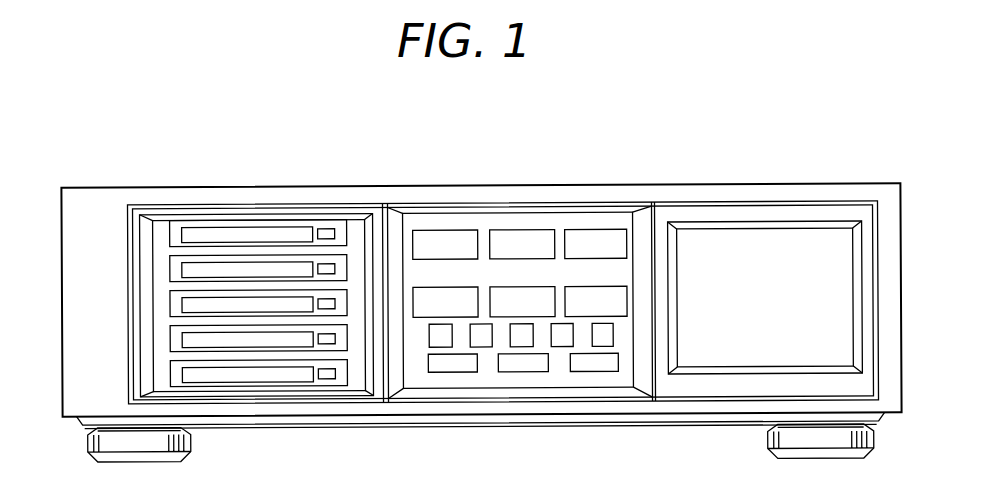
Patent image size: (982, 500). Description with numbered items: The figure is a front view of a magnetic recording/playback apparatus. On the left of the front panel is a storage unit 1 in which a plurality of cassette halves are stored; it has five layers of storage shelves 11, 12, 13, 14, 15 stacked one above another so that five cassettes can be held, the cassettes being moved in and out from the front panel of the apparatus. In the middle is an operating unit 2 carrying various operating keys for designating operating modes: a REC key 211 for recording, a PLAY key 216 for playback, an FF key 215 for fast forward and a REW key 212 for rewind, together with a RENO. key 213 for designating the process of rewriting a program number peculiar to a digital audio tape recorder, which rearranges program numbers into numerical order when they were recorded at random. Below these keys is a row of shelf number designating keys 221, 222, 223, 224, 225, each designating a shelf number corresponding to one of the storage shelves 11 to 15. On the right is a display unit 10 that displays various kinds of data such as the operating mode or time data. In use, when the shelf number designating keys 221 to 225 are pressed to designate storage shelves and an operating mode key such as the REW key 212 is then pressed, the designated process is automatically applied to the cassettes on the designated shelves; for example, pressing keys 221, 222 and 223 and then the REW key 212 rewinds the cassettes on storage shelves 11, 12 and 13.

The storage unit 1 is at (276, 203).
The storage shelf 11 is at (175, 233).
The storage shelf 12 is at (177, 267).
The storage shelf 13 is at (177, 303).
The storage shelf 14 is at (177, 340).
The storage shelf 15 is at (177, 373).
The operating unit 2 is at (527, 220).
The REC key 211 is at (543, 230).
The REW key 212 is at (413, 297).
The RENO. key 213 is at (498, 287).
The FF key 215 is at (615, 230).
The PLAY key 216 is at (442, 230).
The shelf number designating key 221 is at (432, 344).
The shelf number designating key 222 is at (488, 344).
The shelf number designating key 223 is at (527, 344).
The shelf number designating key 224 is at (557, 344).
The shelf number designating key 225 is at (609, 337).
The display unit 10 is at (802, 247).